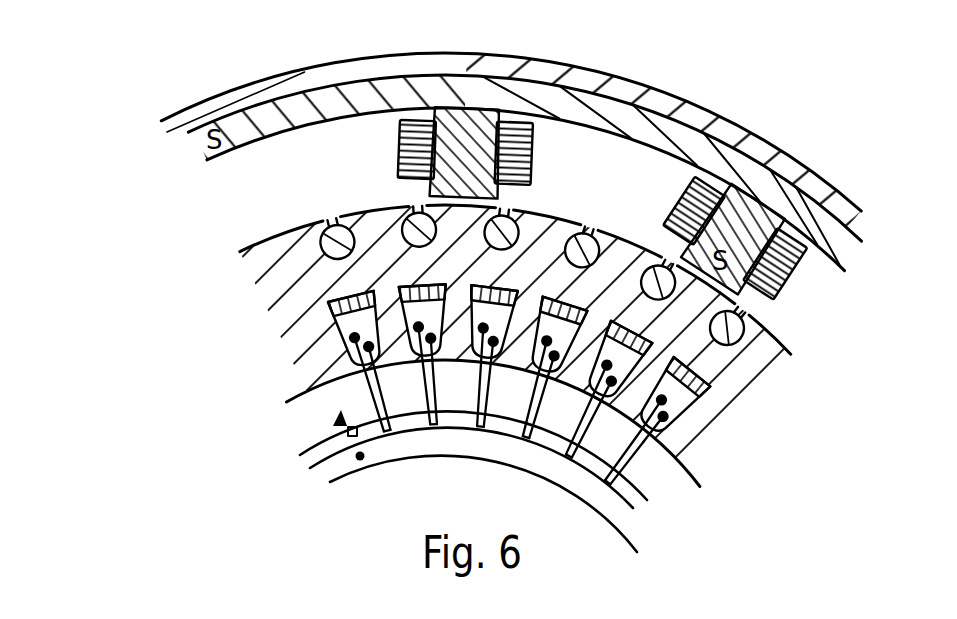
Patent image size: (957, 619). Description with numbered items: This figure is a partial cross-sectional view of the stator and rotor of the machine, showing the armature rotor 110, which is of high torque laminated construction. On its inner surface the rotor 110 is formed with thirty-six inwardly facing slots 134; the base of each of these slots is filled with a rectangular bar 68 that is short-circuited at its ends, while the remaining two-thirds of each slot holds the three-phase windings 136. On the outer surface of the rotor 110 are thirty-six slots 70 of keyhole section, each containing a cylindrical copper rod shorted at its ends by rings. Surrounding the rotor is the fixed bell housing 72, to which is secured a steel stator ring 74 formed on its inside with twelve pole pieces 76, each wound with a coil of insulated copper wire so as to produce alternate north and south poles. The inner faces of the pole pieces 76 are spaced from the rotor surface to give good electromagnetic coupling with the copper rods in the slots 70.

The fixed bell housing 72 is at (349, 58).
The stator ring 74 is at (540, 100).
The pole pieces 76 is at (412, 189).
The slots of keyhole section 70 is at (333, 218).
The armature rotor 110 is at (508, 403).
The rectangular bar 68 is at (703, 387).
The inwardly facing slots 134 is at (672, 416).
The three-phase windings 136 is at (650, 456).